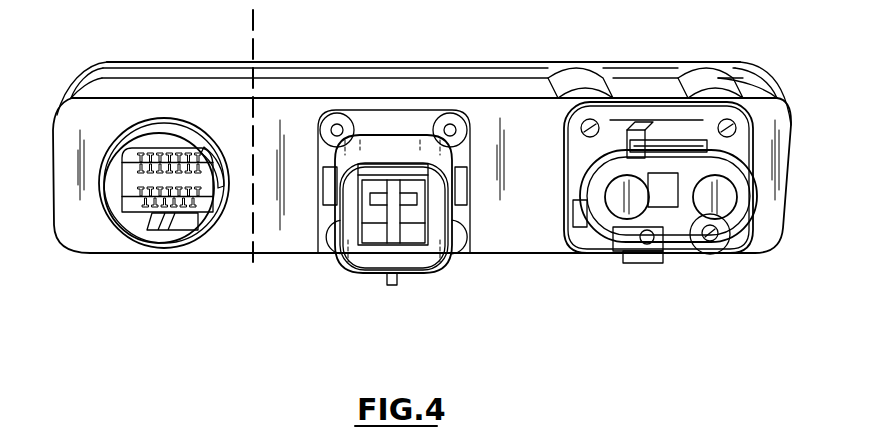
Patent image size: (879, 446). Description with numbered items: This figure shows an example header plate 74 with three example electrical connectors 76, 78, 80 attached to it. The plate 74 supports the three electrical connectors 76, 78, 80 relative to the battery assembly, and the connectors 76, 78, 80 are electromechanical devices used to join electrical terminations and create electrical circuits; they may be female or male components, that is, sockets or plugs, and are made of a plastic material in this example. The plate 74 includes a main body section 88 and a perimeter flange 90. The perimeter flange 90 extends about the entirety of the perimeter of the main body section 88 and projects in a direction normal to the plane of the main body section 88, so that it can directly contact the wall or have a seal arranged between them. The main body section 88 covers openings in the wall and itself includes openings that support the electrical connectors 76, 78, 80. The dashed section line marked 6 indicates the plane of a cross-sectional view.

The plate 74 is at (537, 240).
The electrical connector 76 is at (167, 243).
The electrical connector 78 is at (379, 262).
The electrical connector 80 is at (710, 246).
The main body section 88 is at (490, 228).
The perimeter flange 90 is at (505, 90).
The section line for FIG. 6 is at (253, 10).